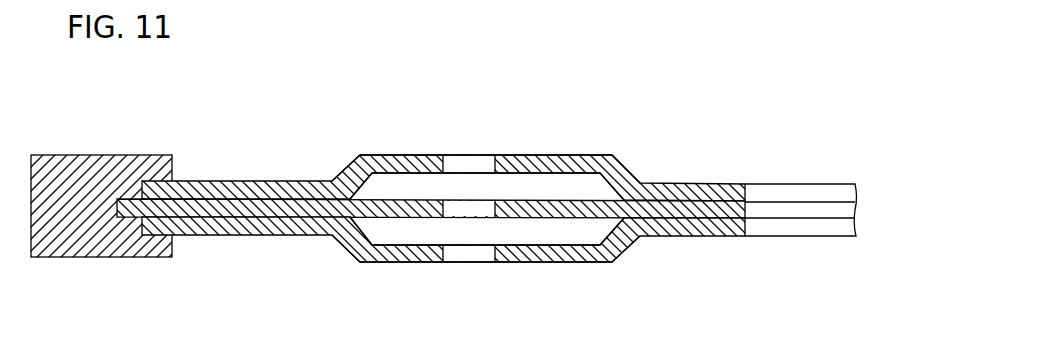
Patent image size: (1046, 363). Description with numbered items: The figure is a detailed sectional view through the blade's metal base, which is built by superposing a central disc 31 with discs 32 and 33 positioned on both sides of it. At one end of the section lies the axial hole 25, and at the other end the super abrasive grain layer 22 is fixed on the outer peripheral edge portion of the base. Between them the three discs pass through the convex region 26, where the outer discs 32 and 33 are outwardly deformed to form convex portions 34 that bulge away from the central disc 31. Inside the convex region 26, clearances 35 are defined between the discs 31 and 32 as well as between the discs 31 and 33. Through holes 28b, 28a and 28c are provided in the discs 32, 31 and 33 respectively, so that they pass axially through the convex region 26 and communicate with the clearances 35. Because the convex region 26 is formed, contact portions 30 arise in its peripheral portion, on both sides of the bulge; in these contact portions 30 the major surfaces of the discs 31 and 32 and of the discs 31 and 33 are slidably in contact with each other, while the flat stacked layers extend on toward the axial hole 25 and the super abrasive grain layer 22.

The super abrasive grain layer 22 is at (102, 258).
The axial hole 25 is at (793, 210).
The convex region 26 is at (486, 191).
The through hole 28a is at (458, 208).
The through hole 28b is at (477, 165).
The through hole 28c is at (483, 253).
The contact portion 30 is at (433, 210).
The disc 31 is at (268, 207).
The disc 32 is at (246, 181).
The disc 33 is at (242, 236).
The convex portion 34 is at (553, 160).
The clearance 35 is at (392, 184).